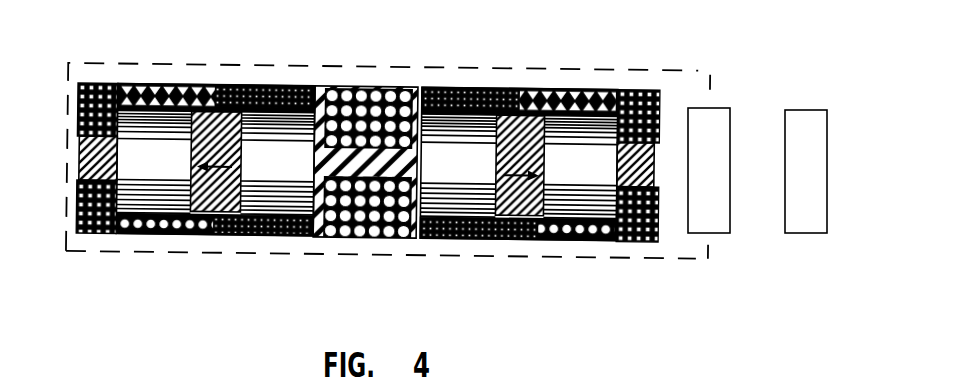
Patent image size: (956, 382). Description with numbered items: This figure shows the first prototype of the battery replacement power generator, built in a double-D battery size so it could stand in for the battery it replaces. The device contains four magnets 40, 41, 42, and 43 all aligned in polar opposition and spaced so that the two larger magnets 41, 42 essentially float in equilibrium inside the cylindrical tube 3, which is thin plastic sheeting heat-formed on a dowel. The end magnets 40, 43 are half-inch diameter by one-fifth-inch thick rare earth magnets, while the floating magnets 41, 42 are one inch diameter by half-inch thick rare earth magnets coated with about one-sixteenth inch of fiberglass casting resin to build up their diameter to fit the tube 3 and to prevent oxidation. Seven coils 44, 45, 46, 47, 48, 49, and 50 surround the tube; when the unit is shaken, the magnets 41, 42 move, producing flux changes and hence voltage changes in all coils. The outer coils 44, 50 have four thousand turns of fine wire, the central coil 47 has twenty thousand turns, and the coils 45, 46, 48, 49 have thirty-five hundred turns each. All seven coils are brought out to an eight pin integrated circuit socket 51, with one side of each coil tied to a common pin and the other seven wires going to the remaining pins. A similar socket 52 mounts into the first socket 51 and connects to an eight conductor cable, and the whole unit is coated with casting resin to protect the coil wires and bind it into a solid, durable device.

The cylindrical tube 3 is at (287, 236).
The magnet 40 is at (80, 166).
The magnet 41 is at (238, 235).
The magnet 42 is at (527, 240).
The magnet 43 is at (618, 187).
The coil 44 is at (103, 235).
The coil 45 is at (141, 86).
The coil 46 is at (252, 87).
The coil 47 is at (366, 88).
The coil 48 is at (481, 88).
The coil 49 is at (573, 88).
The coil 50 is at (641, 90).
The integrated circuit socket 51 is at (696, 233).
The socket 52 is at (822, 110).